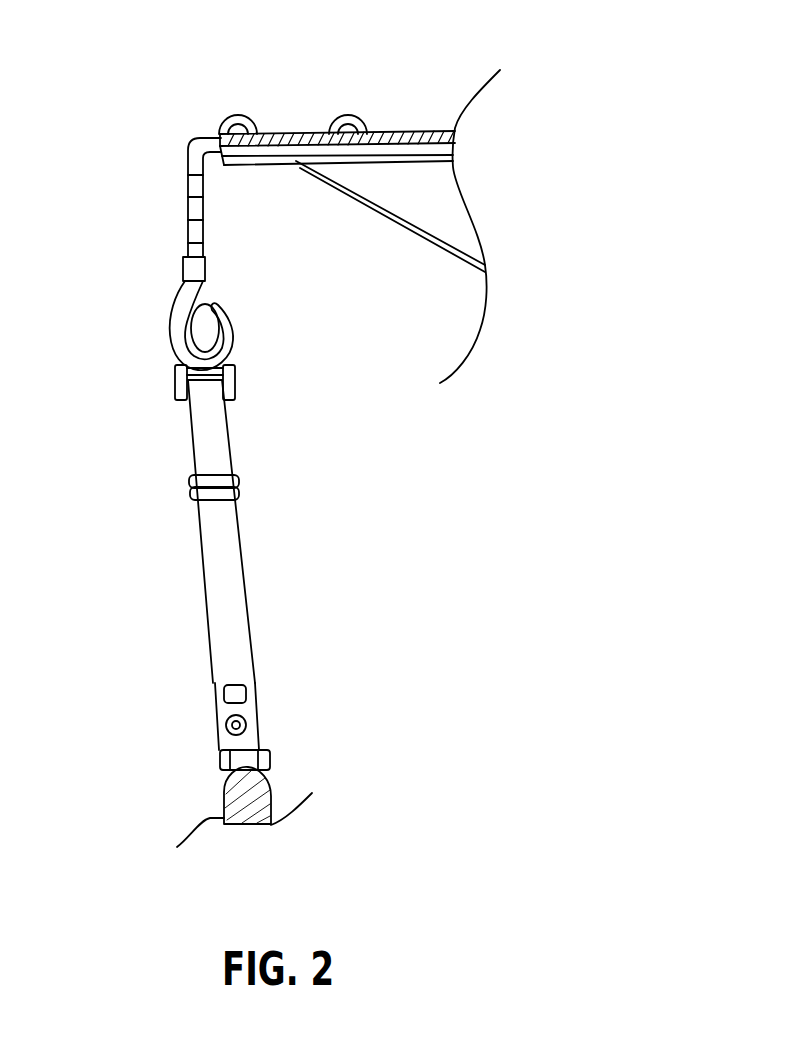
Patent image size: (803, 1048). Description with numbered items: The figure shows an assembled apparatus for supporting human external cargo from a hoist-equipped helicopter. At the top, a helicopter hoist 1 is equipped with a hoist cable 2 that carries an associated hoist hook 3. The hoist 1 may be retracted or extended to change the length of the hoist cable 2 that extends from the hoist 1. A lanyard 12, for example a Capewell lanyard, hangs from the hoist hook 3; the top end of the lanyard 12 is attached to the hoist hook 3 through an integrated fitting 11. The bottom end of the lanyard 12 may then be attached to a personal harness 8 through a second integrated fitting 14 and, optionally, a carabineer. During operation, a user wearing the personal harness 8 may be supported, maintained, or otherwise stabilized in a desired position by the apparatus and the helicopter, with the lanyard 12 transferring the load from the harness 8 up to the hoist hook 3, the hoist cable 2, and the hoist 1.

The helicopter hoist 1 is at (297, 163).
The hoist cable 2 is at (381, 132).
The hoist hook 3 is at (172, 317).
The personal harness 8 is at (270, 785).
The integrated fitting 11 is at (232, 382).
The lanyard 12 is at (240, 547).
The lower linkage 14 is at (268, 743).